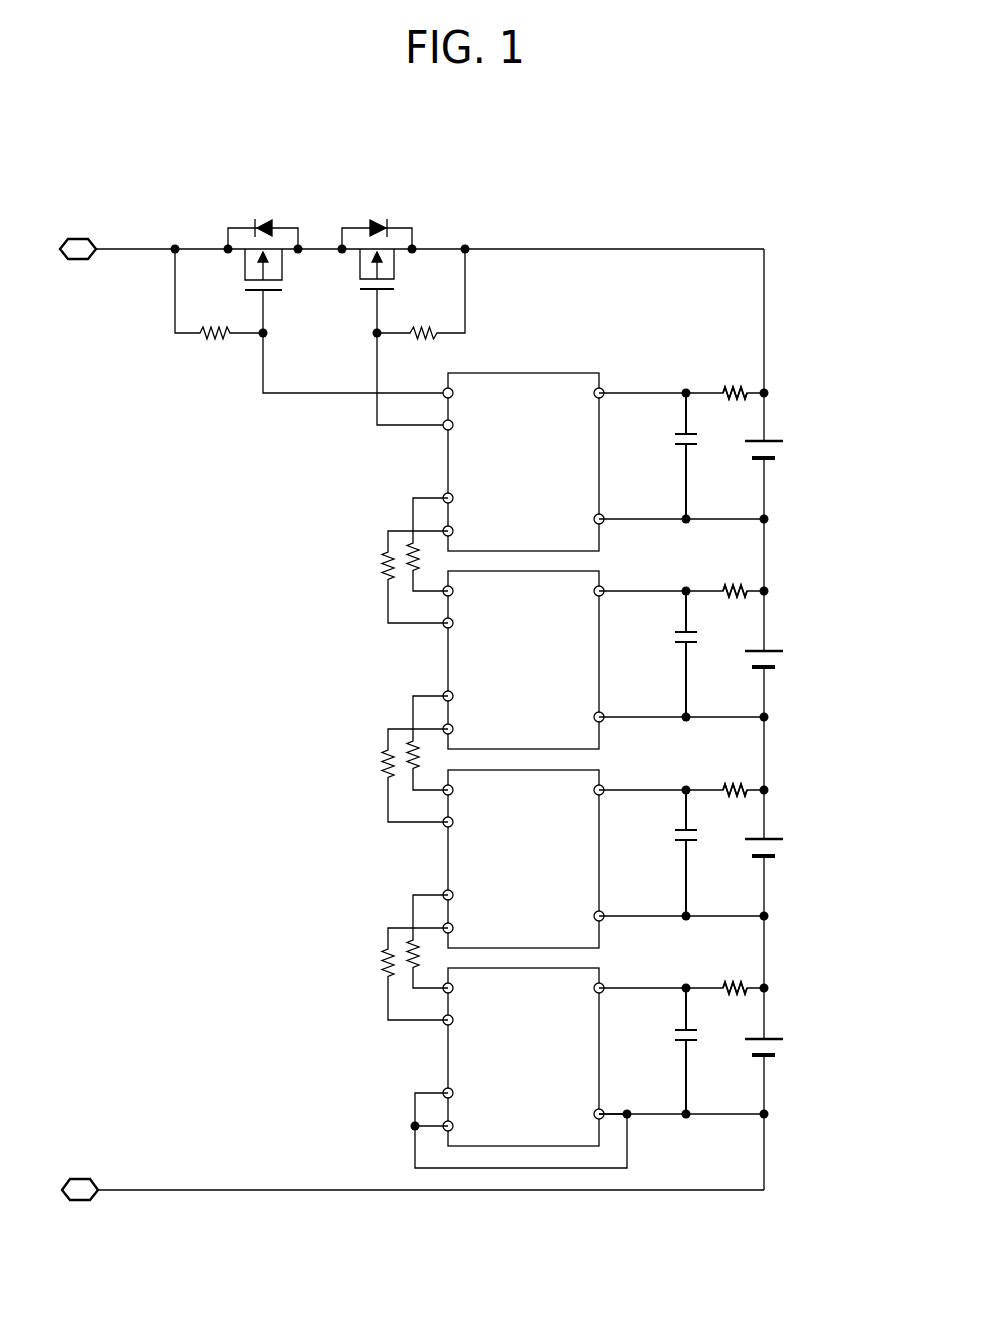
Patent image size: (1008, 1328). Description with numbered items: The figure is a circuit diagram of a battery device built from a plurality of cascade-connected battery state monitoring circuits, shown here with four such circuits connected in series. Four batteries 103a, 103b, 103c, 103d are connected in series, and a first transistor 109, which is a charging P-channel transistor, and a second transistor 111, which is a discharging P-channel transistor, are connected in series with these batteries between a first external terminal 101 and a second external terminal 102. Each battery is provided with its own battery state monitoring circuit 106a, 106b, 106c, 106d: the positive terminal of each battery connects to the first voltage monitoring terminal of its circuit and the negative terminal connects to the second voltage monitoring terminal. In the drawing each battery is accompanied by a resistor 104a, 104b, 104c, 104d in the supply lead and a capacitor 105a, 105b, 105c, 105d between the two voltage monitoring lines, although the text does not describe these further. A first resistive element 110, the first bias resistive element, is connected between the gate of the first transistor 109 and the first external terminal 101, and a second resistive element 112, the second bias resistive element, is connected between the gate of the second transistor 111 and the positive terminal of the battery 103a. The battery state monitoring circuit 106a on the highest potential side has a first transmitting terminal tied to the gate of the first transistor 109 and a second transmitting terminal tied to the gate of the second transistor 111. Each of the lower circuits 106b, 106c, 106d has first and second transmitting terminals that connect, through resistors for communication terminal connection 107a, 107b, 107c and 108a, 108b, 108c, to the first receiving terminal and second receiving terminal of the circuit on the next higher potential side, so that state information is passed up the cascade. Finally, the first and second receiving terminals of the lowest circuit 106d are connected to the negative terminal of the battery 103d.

The first external terminal 101 is at (97, 243).
The second external terminal 102 is at (85, 1180).
The battery 103a is at (778, 443).
The battery 103b is at (778, 653).
The battery 103c is at (778, 841).
The battery 103d is at (778, 1041).
The power supply resistor 104a is at (737, 378).
The power supply resistor 104b is at (737, 576).
The power supply resistor 104c is at (737, 775).
The power supply resistor 104d is at (737, 975).
The power supply capacitor 105a is at (702, 435).
The power supply capacitor 105b is at (702, 634).
The power supply capacitor 105c is at (702, 831).
The power supply capacitor 105d is at (702, 1032).
The battery state monitoring circuit 106a is at (453, 485).
The battery state monitoring circuit 106b is at (453, 652).
The battery state monitoring circuit 106c is at (455, 866).
The battery state monitoring circuit 106d is at (453, 1065).
The resistor for communication terminal connection 107a is at (402, 543).
The resistor for communication terminal connection 107b is at (402, 741).
The resistor for communication terminal connection 107c is at (410, 940).
The resistor for communication terminal connection 108a is at (383, 565).
The resistor for communication terminal connection 108b is at (383, 763).
The resistor for communication terminal connection 108c is at (385, 963).
The first transistor 109 is at (285, 212).
The first resistive element 110 is at (200, 342).
The second transistor 111 is at (402, 210).
The second resistive element 112 is at (436, 317).